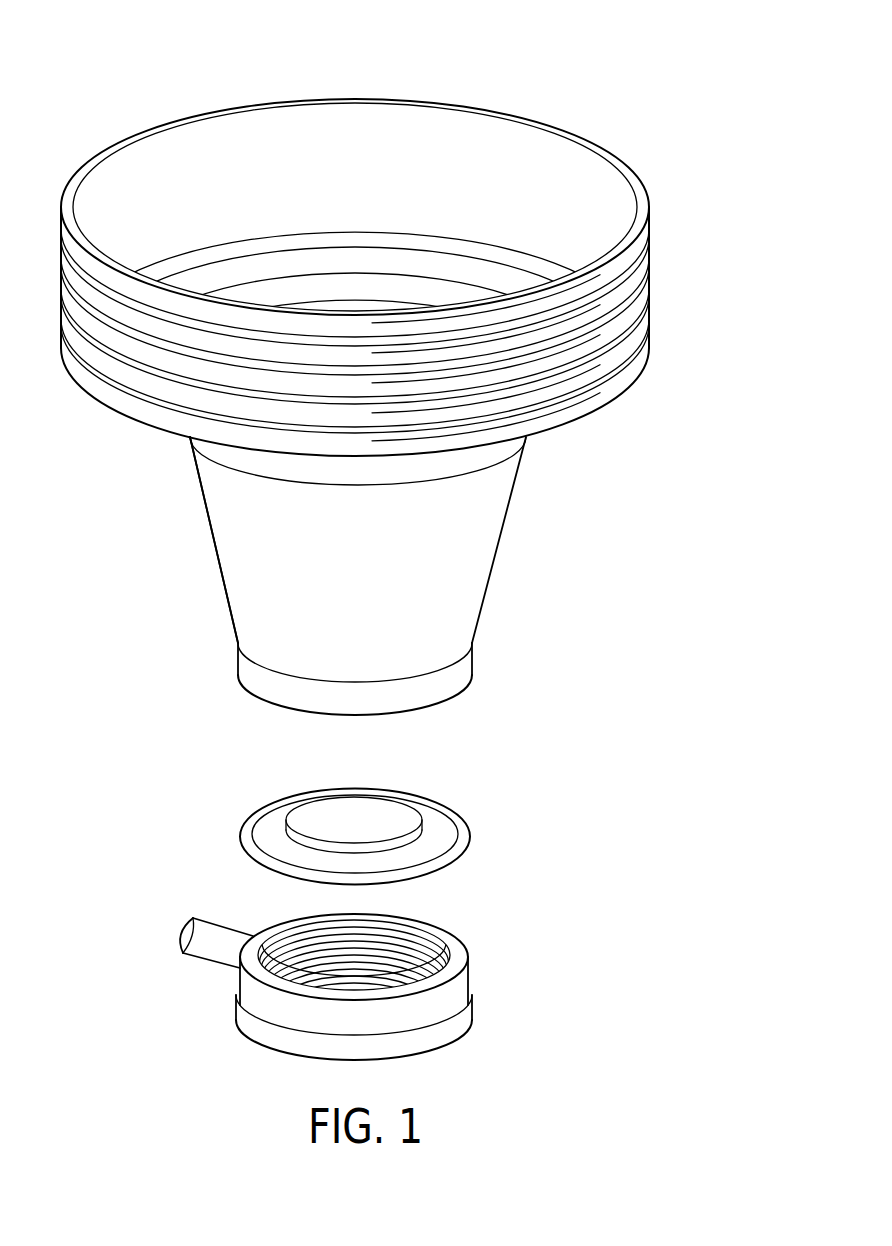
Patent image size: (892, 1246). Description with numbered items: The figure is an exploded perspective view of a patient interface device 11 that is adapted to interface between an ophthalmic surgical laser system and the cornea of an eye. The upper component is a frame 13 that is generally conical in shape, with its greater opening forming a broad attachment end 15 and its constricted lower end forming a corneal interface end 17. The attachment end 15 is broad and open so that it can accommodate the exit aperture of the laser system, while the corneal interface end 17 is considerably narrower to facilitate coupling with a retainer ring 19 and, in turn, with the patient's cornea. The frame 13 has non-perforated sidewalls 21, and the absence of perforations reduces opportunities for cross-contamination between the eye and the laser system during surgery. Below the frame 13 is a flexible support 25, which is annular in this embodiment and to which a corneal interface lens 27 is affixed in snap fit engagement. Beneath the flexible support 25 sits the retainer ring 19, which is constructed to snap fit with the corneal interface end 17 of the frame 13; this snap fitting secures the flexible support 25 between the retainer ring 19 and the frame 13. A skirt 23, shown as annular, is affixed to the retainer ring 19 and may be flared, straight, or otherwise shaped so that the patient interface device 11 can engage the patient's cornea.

The patient interface device 11 is at (614, 85).
The frame 13 is at (492, 510).
The attachment end 15 is at (650, 210).
The corneal interface end 17 is at (473, 660).
The retainer ring 19 is at (468, 952).
The sidewalls 21 is at (203, 523).
The skirt 23 is at (472, 1007).
The flexible support 25 is at (391, 814).
The corneal interface lens 27 is at (308, 813).